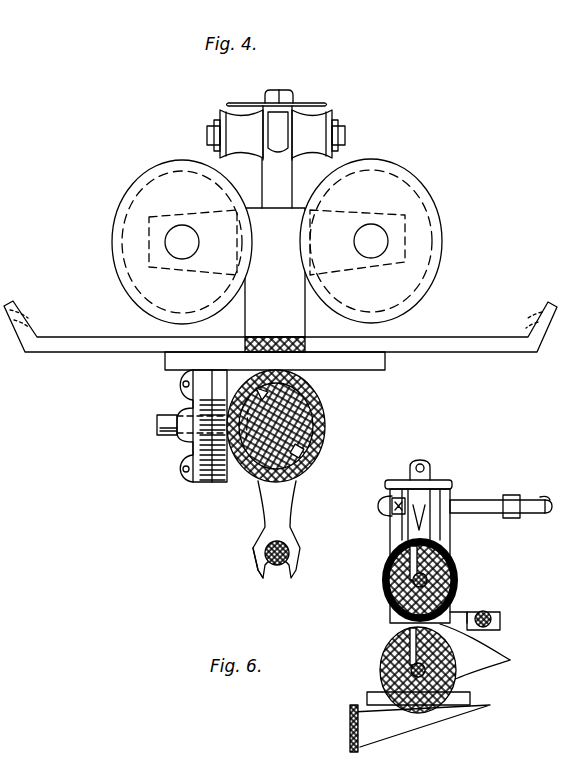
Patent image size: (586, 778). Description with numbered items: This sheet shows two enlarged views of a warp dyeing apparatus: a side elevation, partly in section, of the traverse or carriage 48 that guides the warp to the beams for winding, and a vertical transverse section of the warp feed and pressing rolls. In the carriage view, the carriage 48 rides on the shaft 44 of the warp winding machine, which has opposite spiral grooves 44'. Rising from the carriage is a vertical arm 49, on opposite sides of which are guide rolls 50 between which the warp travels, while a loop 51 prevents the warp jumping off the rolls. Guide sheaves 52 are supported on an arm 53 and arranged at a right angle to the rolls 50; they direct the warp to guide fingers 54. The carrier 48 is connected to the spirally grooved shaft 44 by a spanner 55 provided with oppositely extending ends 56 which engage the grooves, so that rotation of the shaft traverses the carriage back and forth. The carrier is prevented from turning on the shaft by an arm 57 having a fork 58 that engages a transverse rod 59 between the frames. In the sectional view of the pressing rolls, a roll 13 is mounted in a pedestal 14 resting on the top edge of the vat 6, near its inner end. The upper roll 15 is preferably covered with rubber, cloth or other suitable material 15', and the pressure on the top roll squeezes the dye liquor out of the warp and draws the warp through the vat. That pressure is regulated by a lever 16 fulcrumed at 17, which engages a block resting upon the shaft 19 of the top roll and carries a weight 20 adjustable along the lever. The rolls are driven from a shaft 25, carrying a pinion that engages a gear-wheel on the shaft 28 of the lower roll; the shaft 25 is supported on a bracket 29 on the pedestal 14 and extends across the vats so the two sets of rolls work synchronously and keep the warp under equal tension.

In FIG. 6, the vat 6 is at (370, 730).
In FIG. 6, the roll 13 is at (404, 670).
In FIG. 6, the pedestal 14 is at (495, 671).
In FIG. 6, the upper roll 15 is at (403, 580).
In FIG. 6, the covering material 15' is at (433, 541).
In FIG. 6, the lever 16 is at (480, 504).
In FIG. 6, the fulcrum 17 is at (399, 515).
In FIG. 6, the shaft of the top roll 19 is at (456, 567).
In FIG. 6, the weight 20 is at (508, 518).
In FIG. 6, the shaft 25 is at (490, 612).
In FIG. 6, the shaft of the lower roll 28 is at (426, 670).
In FIG. 6, the bracket 29 is at (484, 638).
In FIG. 4, the shaft 44 is at (304, 426).
In FIG. 4, the spiral grooves 44' is at (309, 434).
In FIG. 4, the traverse or carriage 48 is at (298, 470).
In FIG. 4, the vertical arm 49 is at (277, 183).
In FIG. 4, the guide rolls 50 is at (276, 133).
In FIG. 4, the loop 51 is at (248, 104).
In FIG. 4, the guide sheaves 52 is at (120, 272).
In FIG. 4, the arm 53 is at (275, 280).
In FIG. 4, the guide fingers 54 is at (144, 353).
In FIG. 4, the spanner 55 is at (168, 436).
In FIG. 4, the oppositely extending ends 56 is at (262, 394).
In FIG. 4, the arm 57 is at (281, 513).
In FIG. 4, the fork 58 is at (253, 556).
In FIG. 4, the transverse rod 59 is at (278, 564).